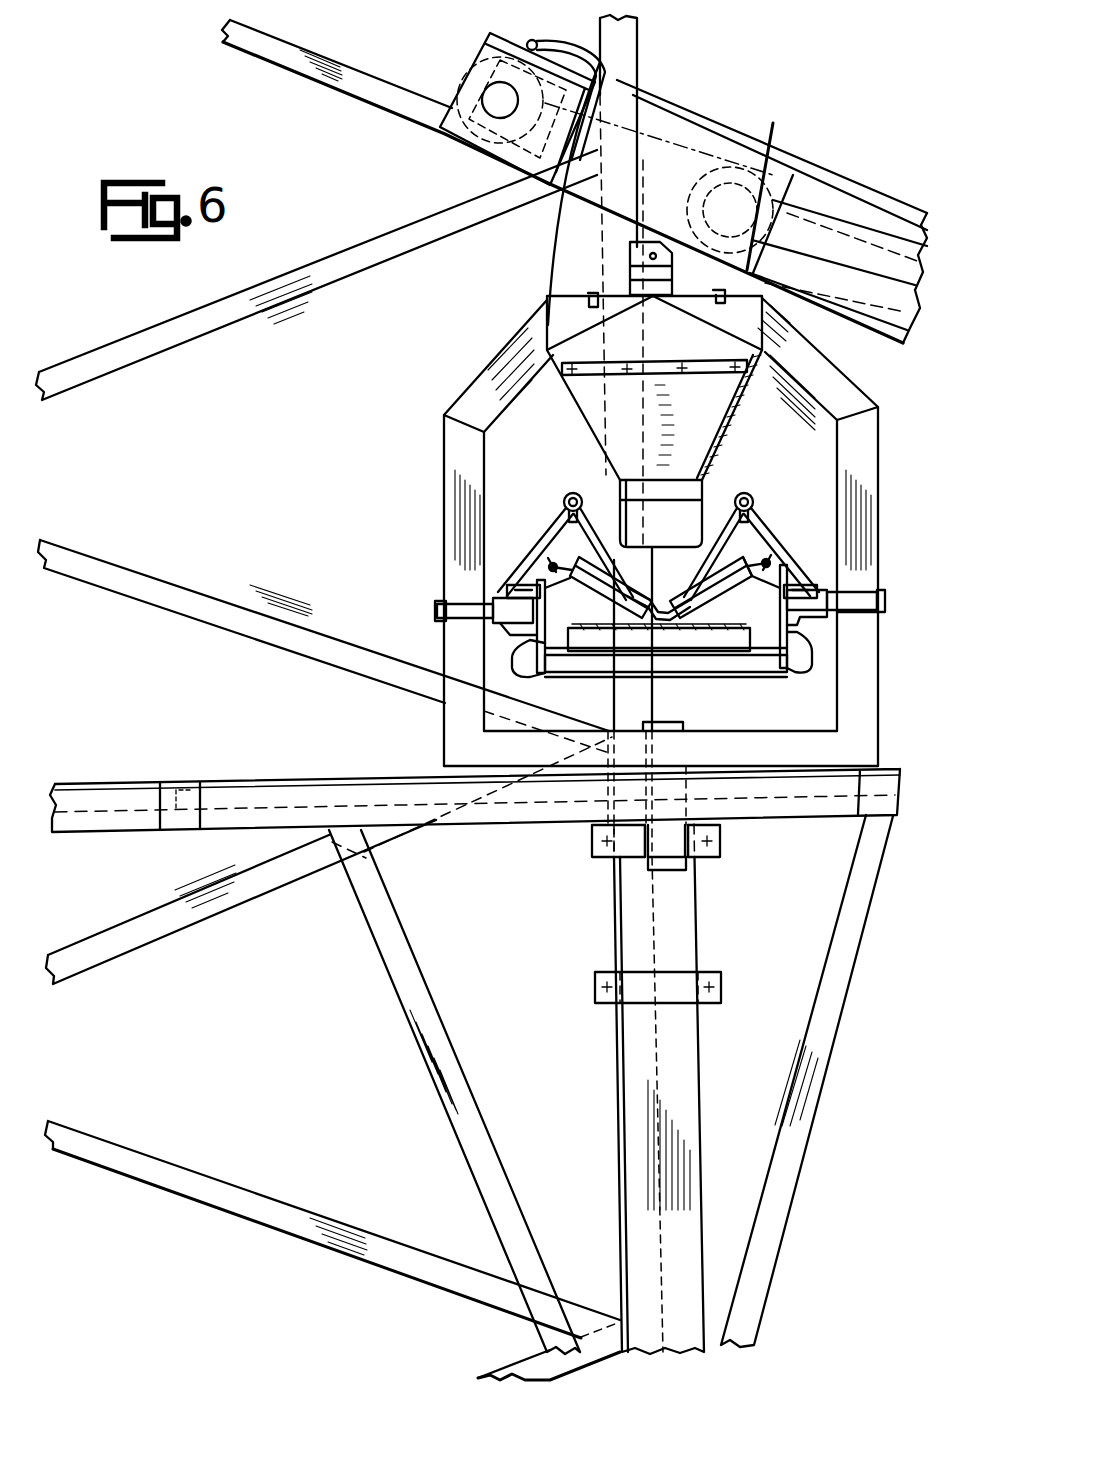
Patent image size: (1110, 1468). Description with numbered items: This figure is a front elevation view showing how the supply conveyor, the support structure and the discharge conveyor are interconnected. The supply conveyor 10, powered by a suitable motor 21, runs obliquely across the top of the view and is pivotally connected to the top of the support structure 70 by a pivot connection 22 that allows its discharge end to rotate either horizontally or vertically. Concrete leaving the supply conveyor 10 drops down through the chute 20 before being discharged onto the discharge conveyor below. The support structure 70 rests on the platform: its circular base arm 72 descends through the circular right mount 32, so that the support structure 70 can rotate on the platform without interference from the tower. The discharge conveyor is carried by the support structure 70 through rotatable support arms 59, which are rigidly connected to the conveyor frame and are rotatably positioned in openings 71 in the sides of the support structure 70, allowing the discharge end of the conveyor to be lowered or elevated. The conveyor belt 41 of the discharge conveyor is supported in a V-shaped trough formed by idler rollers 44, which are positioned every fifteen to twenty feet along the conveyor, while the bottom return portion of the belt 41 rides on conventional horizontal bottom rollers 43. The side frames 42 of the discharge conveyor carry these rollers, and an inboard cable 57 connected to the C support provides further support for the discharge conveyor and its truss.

The supply conveyor 10 is at (815, 172).
The chute 20 is at (712, 428).
The motor 21 is at (482, 50).
The pivot connection 22 is at (642, 247).
The right mount 32 is at (645, 840).
The conveyor belt 41 is at (640, 590).
The side frames 42 is at (552, 578).
The horizontal bottom rollers 43 is at (680, 645).
The idler rollers 44 is at (698, 608).
The inboard cable 57 is at (884, 601).
The rotatable support arms 59 is at (440, 606).
The support structure 70 is at (865, 456).
The openings 71 is at (867, 612).
The circular base arm 72 is at (690, 865).